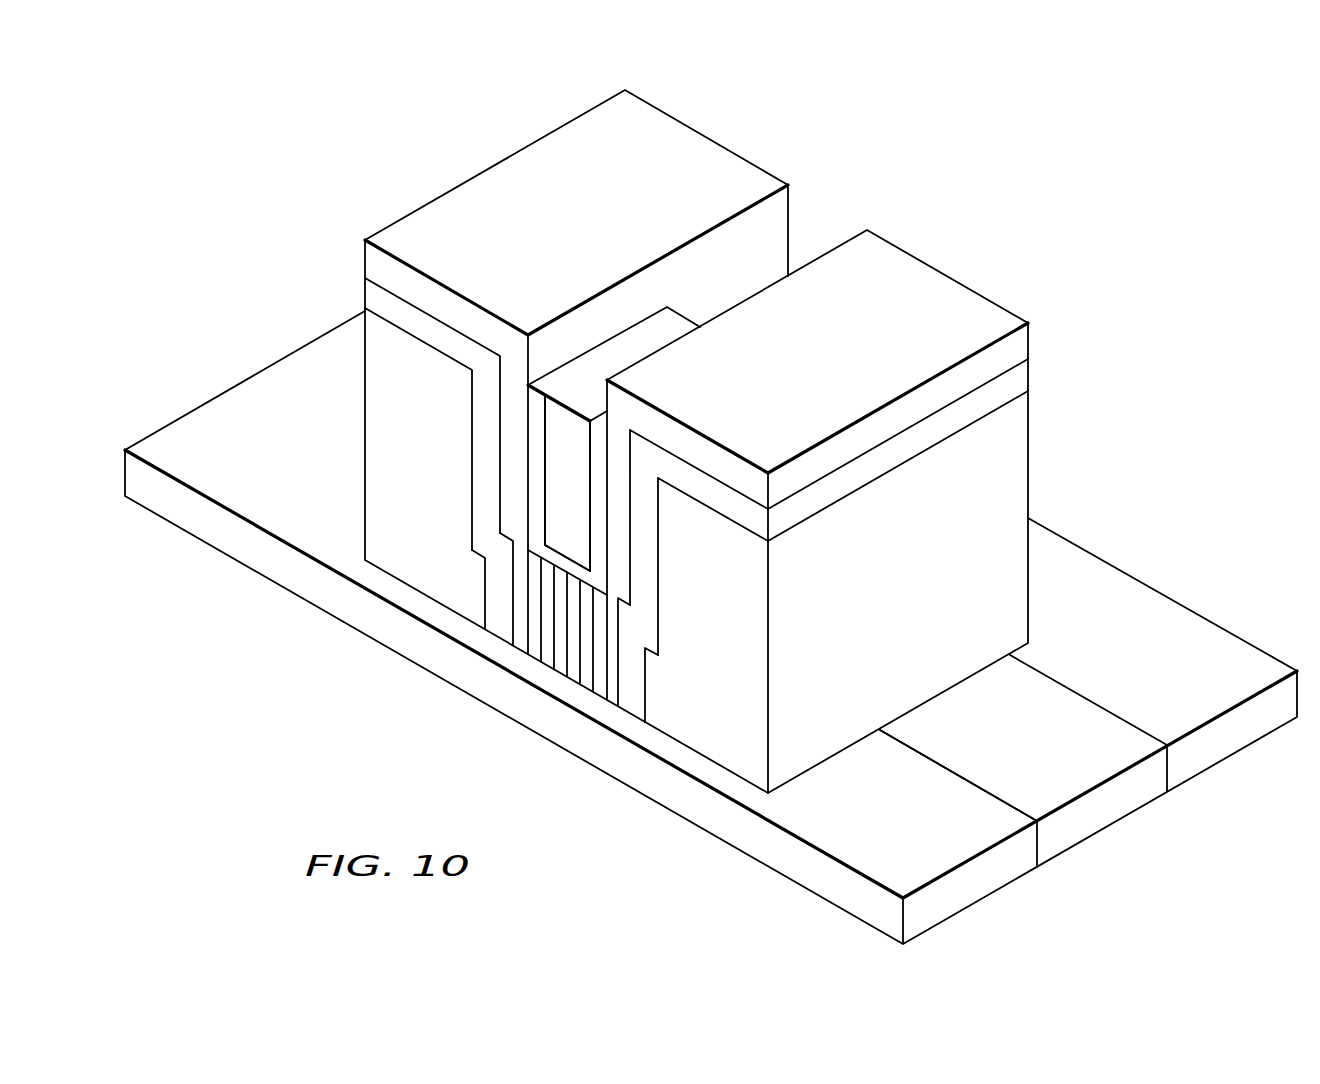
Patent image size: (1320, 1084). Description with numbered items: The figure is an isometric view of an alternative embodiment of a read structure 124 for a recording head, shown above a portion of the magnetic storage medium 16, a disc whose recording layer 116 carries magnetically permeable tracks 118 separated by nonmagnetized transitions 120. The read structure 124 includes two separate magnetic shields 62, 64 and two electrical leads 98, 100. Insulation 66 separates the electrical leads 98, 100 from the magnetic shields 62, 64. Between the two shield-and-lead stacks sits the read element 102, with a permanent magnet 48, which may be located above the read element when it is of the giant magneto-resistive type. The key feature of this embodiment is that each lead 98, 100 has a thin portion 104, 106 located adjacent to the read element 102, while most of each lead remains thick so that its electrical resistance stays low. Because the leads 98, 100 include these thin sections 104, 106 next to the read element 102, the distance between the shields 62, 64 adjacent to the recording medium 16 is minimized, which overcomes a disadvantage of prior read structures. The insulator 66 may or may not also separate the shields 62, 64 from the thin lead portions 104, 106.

The magnetic storage medium 16 is at (172, 342).
The permanent magnet 48 is at (584, 492).
The magnetic shield 62 is at (915, 596).
The magnetic shield 64 is at (431, 484).
The insulation 66 is at (376, 296).
The electrical lead 98 is at (1028, 343).
The electrical lead 100 is at (591, 219).
The read element 102 is at (572, 653).
The thin lead portion 104 is at (613, 670).
The thin lead portion 106 is at (518, 590).
The recording layer 116 is at (1216, 566).
The magnetically permeable tracks 118 is at (1181, 681).
The nonmagnetized transitions 120 is at (1058, 762).
The read structure 124 is at (811, 116).